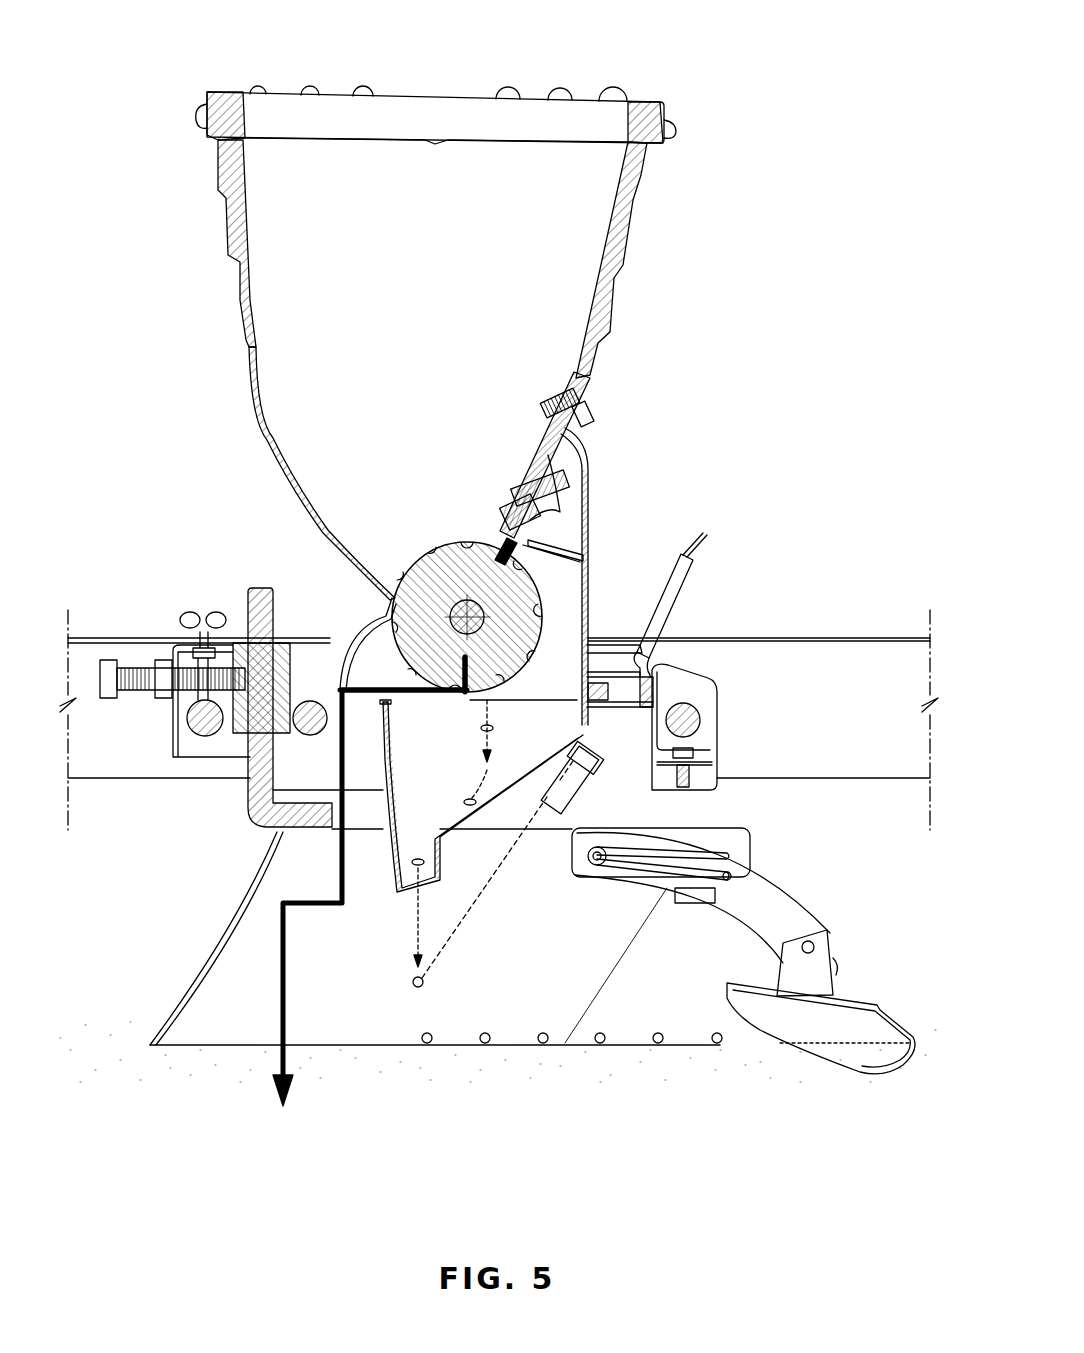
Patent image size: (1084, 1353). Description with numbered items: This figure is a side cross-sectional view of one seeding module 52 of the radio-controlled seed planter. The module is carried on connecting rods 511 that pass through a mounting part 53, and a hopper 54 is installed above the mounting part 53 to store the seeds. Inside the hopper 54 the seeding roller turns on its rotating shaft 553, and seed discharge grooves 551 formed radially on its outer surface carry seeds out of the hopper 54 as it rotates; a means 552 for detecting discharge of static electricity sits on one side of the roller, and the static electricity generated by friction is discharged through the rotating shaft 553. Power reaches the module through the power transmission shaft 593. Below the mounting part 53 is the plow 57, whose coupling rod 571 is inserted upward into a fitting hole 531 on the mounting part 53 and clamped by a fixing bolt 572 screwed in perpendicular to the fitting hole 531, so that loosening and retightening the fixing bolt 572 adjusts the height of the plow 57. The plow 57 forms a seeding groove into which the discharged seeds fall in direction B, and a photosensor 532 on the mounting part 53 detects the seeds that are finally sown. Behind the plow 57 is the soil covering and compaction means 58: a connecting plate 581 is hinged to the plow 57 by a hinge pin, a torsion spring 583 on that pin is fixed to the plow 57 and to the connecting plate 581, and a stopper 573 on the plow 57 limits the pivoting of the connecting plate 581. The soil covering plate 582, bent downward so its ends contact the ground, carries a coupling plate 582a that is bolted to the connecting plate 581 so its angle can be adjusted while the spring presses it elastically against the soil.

The seeding module 52 is at (702, 103).
The hopper 54 is at (225, 203).
The seed discharge grooves 551 is at (537, 562).
The rotating shaft 553 is at (576, 604).
The means for detecting discharge of static electricity 552 is at (535, 657).
The coupling rod 571 is at (247, 590).
The fixing bolt 572 is at (106, 658).
The mounting part 53 is at (717, 690).
The connecting rods 511 is at (188, 730).
The photosensor 532 is at (603, 757).
The fitting hole 531 is at (250, 748).
The power transmission shaft 593 is at (316, 740).
The torsion spring 583 is at (720, 873).
The connecting plate 581 is at (793, 912).
The coupling plate 582a is at (818, 982).
The stopper 573 is at (685, 903).
The soil covering plate 582 is at (852, 1058).
The soil covering and compaction means 58 is at (784, 1052).
The plow 57 is at (215, 1016).
The seed drop direction B is at (286, 1096).